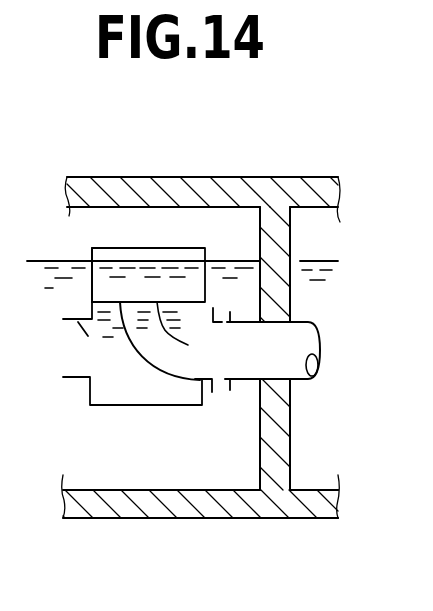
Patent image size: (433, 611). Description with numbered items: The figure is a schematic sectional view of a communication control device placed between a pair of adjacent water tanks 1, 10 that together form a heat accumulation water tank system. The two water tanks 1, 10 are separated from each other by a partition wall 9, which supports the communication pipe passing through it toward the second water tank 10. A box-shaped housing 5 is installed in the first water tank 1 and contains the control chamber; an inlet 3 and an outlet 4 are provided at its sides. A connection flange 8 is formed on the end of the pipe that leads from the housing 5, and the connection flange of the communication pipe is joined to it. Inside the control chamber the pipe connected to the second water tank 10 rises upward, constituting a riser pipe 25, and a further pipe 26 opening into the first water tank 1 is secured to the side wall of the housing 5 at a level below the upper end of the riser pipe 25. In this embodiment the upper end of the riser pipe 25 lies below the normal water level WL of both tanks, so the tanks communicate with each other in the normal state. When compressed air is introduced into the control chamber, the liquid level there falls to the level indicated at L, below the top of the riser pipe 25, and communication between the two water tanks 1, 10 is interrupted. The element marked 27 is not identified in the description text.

The water tank 1 is at (197, 470).
The inlet 3 is at (208, 328).
The outlet 4 is at (75, 319).
The housing 5 is at (203, 248).
The connection flange 8 is at (210, 383).
The partition wall 9 is at (283, 446).
The water tank 10 is at (313, 478).
The riser pipe 25 is at (148, 338).
The pipe 26 is at (75, 378).
The float side wall 27 is at (92, 262).
The normal water level WL is at (172, 240).
The lowered liquid level L is at (183, 341).